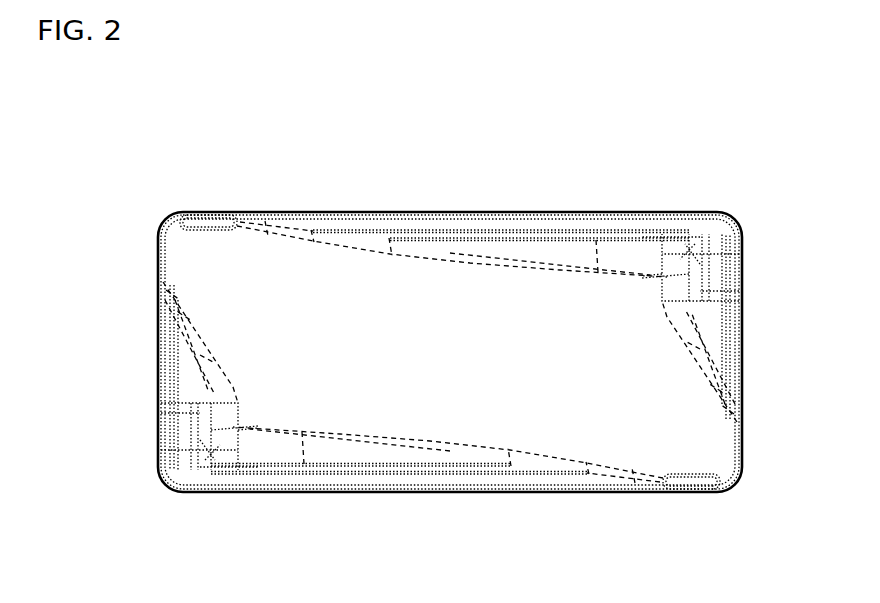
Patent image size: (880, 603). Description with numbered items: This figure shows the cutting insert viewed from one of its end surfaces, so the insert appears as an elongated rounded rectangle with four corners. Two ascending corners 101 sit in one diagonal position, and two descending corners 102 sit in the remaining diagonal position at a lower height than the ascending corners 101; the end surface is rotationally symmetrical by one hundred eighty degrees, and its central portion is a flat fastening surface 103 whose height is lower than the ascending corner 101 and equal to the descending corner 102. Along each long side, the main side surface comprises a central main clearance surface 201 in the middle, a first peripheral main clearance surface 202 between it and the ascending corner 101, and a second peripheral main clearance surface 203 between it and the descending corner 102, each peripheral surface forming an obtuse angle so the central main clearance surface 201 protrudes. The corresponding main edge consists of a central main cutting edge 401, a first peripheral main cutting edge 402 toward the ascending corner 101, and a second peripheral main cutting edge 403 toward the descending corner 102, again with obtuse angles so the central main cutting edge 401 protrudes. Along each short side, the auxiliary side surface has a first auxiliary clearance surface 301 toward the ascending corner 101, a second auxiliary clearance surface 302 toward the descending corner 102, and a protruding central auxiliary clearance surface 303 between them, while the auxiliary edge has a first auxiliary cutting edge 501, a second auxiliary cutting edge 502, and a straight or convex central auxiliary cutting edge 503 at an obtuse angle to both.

The ascending corner 101 is at (725, 222).
The descending corner 102 is at (170, 223).
The flat fastening surface 103 is at (339, 328).
The central main clearance surface 201 is at (461, 212).
The central main cutting edge 401 is at (500, 212).
The first peripheral main clearance surface 202 is at (690, 212).
The first peripheral main cutting edge 402 is at (703, 212).
The second peripheral main clearance surface 203 is at (212, 212).
The second peripheral main cutting edge 403 is at (215, 213).
The first auxiliary cutting edge 501 is at (158, 420).
The first auxiliary clearance surface 301 is at (158, 437).
The central auxiliary cutting edge 503 is at (158, 350).
The central auxiliary clearance surface 303 is at (158, 372).
The second auxiliary cutting edge 502 is at (158, 282).
The second auxiliary clearance surface 302 is at (158, 288).